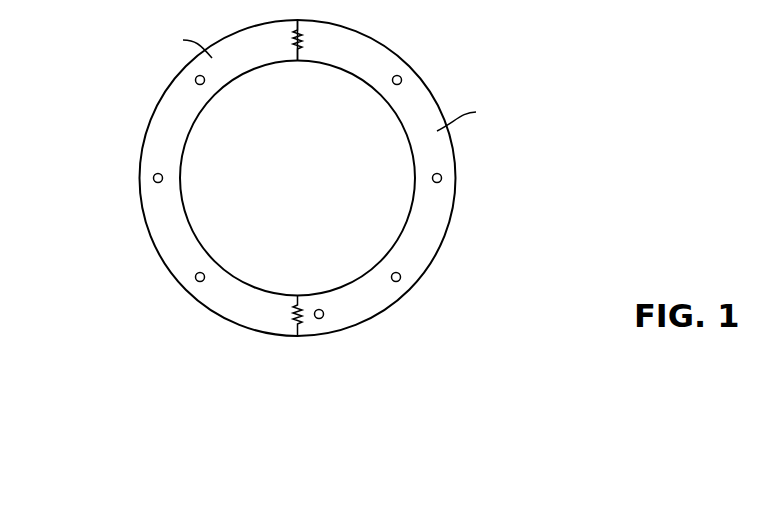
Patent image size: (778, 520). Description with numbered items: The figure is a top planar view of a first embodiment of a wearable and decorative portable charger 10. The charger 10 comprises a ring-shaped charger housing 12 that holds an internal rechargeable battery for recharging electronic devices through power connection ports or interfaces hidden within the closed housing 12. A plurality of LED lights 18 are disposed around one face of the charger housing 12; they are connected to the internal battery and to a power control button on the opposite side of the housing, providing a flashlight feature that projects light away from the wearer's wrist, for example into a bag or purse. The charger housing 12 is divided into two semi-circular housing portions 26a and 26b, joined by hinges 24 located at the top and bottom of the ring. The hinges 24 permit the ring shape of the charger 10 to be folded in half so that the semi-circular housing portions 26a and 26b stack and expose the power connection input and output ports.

The portable charger 10 is at (102, 256).
The charger housing 12 is at (421, 233).
The LED lights 18 is at (205, 80).
The hinges 24 is at (306, 31).
The semi-circular housing portion 26a is at (172, 45).
The semi-circular housing portion 26b is at (479, 116).